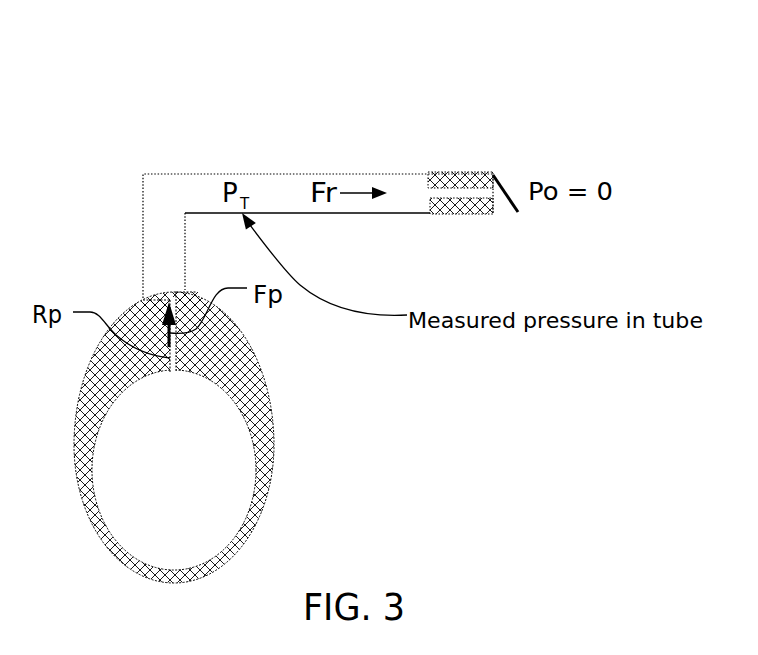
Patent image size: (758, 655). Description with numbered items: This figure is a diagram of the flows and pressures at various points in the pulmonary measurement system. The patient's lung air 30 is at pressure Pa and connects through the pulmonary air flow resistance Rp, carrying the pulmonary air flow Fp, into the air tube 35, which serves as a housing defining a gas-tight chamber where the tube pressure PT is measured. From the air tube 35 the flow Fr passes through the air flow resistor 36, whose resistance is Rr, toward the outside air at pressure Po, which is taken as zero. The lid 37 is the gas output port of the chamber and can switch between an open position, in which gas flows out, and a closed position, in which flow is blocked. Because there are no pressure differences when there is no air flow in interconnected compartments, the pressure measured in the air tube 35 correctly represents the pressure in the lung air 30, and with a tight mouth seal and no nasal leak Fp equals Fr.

The lung air 30 is at (217, 458).
The air tube 35 is at (393, 174).
The air flow resistor 36 is at (460, 170).
The lid 37 is at (503, 182).